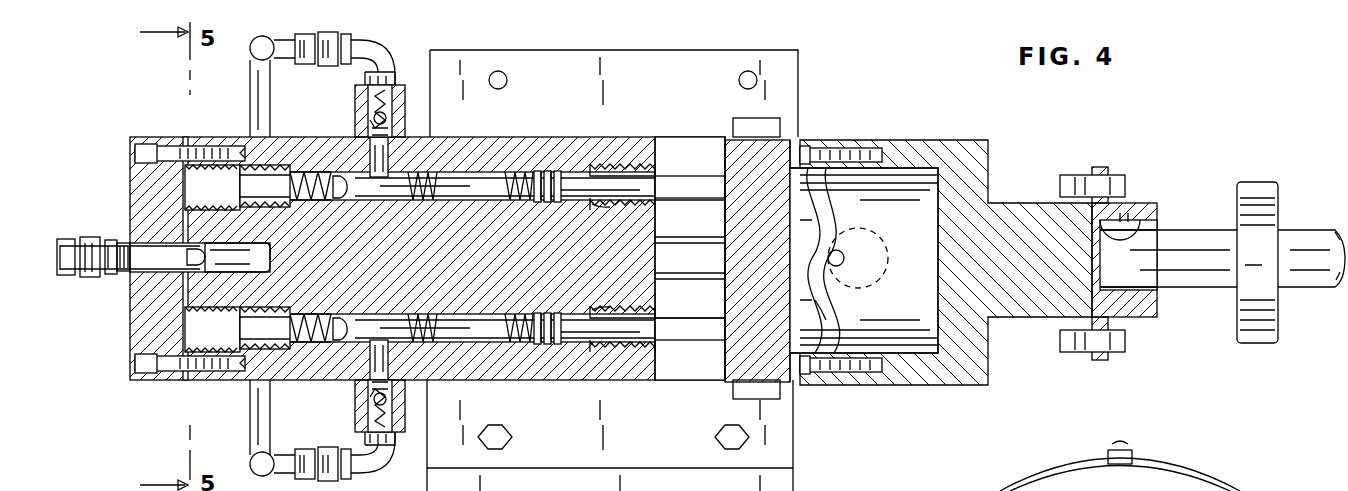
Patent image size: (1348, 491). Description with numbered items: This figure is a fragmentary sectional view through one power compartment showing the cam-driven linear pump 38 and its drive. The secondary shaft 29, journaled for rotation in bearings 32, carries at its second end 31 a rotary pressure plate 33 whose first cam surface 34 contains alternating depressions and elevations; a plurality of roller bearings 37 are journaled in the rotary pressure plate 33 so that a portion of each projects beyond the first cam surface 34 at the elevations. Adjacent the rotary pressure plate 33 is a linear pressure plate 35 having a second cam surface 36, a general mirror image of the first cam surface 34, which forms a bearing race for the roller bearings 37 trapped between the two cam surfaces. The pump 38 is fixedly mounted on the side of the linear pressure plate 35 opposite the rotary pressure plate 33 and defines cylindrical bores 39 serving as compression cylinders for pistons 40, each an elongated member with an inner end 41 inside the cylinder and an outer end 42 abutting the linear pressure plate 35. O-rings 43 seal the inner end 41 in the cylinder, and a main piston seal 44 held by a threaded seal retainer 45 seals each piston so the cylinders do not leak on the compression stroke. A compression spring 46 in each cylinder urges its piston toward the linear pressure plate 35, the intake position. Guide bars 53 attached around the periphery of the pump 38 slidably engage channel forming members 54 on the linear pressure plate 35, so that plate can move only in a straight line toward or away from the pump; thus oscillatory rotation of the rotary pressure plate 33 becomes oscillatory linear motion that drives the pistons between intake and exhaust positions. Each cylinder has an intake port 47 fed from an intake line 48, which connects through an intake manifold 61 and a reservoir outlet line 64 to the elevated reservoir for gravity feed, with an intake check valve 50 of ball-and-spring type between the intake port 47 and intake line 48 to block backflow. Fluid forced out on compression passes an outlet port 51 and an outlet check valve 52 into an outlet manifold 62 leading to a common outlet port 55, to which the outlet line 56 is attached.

The secondary shaft 29 is at (1325, 232).
The second end 31 is at (1140, 207).
The bearings 32 is at (1280, 183).
The rotary pressure plate 33 is at (992, 155).
The first cam surface 34 is at (840, 200).
The linear pressure plate 35 is at (735, 257).
The second cam surface 36 is at (830, 320).
The roller bearings 37 is at (868, 150).
The linear pump 38 is at (171, 128).
The cylindrical bores 39 is at (475, 182).
The pistons 40 is at (690, 178).
The inner end 41 is at (536, 178).
The outer end 42 is at (722, 208).
The O-rings 43 is at (556, 172).
The main piston seal 44 is at (590, 212).
The threaded seal retainer 45 is at (620, 165).
The compression spring 46 is at (507, 203).
The intake port 47 is at (388, 168).
The intake line 48 is at (385, 60).
The intake check valve 50 is at (372, 115).
The outlet port 51 is at (200, 192).
The outlet check valve 52 is at (344, 203).
The guide bars 53 is at (670, 57).
The channel forming members 54 is at (790, 118).
The common outlet port 55 is at (172, 250).
The outlet line 56 is at (74, 280).
The intake manifold 61 is at (250, 98).
The outlet manifold 62 is at (195, 266).
The reservoir outlet line 64 is at (1059, 466).